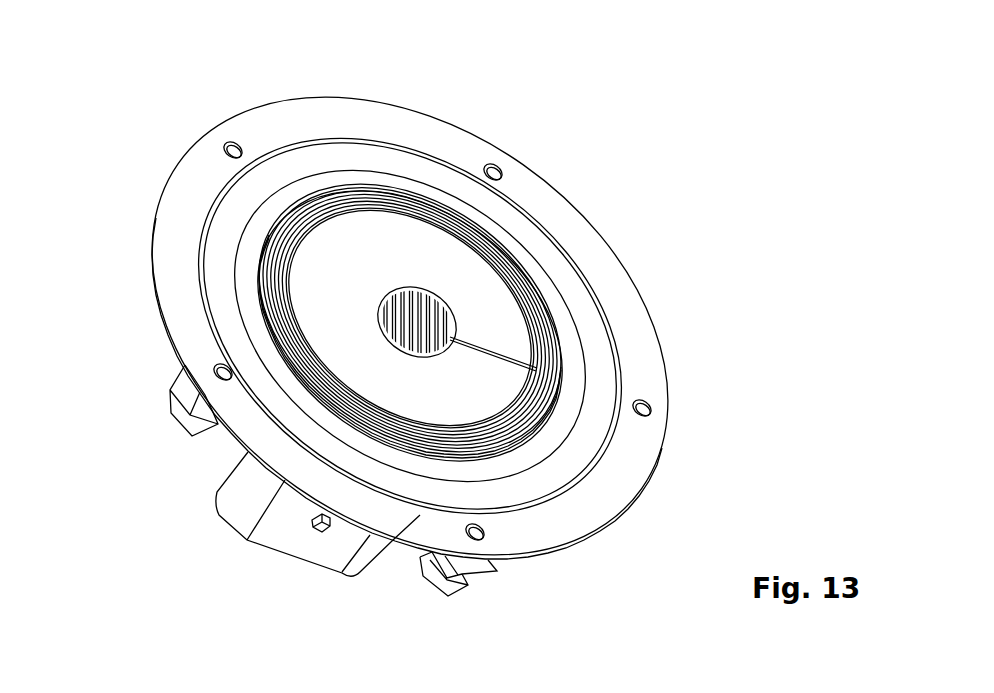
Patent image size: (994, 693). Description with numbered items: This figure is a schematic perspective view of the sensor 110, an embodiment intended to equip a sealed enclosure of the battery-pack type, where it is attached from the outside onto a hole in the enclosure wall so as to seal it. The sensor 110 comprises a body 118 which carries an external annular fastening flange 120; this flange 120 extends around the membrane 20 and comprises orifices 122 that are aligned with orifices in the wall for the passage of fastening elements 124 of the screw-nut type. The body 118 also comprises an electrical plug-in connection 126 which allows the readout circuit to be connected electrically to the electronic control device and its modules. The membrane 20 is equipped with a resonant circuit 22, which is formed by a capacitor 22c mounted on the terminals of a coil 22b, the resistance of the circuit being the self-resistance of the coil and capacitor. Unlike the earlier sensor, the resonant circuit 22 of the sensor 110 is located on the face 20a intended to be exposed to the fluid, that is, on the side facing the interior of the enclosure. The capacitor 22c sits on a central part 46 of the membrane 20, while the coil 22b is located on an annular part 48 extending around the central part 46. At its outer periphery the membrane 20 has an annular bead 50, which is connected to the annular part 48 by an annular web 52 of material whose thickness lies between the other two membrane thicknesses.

The sensor 110 is at (722, 155).
The external annular fastening flange 120 is at (648, 452).
The orifices 122 is at (230, 142).
The annular web 52 is at (588, 460).
The annular bead 50 is at (528, 462).
The membrane 20 is at (603, 266).
The face 20a is at (514, 332).
The resonant circuit 22 is at (375, 182).
The coil 22b is at (452, 449).
The capacitor 22c is at (433, 292).
The central part 46 is at (347, 298).
The annular part 48 is at (333, 343).
The fastening elements 124 is at (181, 431).
The body 118 is at (519, 574).
The electrical plug-in connection 126 is at (266, 548).